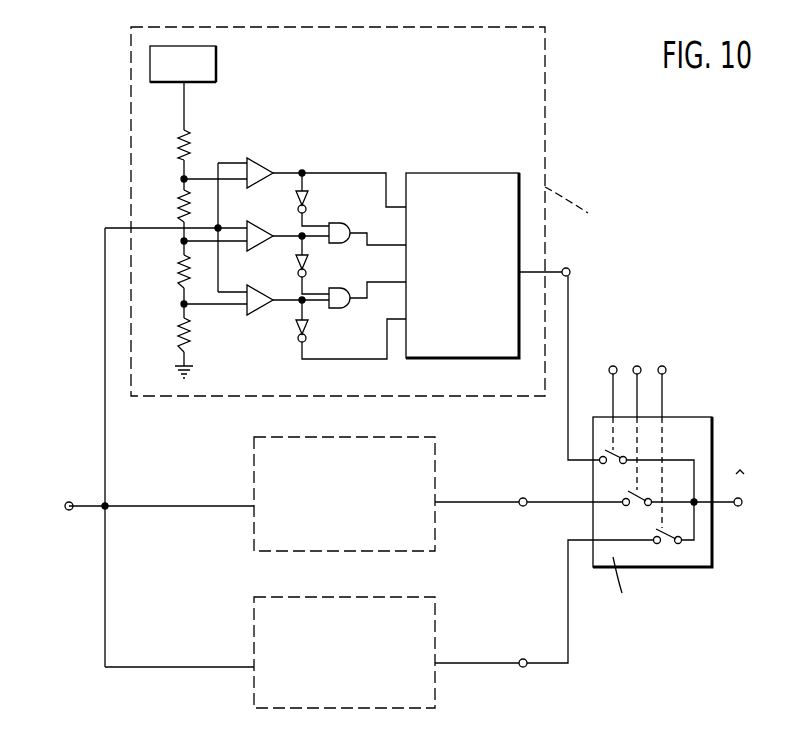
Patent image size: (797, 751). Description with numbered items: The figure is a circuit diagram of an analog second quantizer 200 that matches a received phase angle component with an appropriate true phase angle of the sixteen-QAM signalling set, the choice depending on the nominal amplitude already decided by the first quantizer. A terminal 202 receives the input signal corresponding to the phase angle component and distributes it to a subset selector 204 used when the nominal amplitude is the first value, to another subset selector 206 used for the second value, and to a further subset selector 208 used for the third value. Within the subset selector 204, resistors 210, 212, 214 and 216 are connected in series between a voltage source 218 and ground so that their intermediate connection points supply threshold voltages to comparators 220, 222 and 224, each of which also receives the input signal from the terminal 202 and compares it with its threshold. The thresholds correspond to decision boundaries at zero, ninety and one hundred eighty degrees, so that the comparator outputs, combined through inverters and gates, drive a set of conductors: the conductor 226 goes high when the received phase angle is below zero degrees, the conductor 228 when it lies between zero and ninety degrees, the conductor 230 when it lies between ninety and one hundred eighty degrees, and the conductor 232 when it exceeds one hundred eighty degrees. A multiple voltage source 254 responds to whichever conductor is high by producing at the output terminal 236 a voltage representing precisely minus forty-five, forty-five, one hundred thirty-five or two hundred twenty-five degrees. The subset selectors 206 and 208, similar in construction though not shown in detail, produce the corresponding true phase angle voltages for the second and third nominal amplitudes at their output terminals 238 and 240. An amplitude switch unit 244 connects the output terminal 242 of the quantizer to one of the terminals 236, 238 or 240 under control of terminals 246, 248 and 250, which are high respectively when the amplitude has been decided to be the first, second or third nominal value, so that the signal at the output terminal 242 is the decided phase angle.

The second quantizer 200 is at (102, 97).
The terminal 202 is at (68, 511).
The subset selector 204 is at (131, 155).
The subset selector 206 is at (254, 484).
The subset selector 208 is at (254, 630).
The resistor 210 is at (192, 150).
The resistor 212 is at (180, 208).
The resistor 214 is at (178, 270).
The resistor 216 is at (178, 327).
The voltage source 218 is at (212, 72).
The comparator 220 is at (262, 312).
The comparator 222 is at (266, 246).
The comparator 224 is at (263, 160).
The conductor 226 is at (374, 359).
The conductor 228 is at (356, 306).
The conductor 230 is at (370, 213).
The conductor 232 is at (340, 172).
The output terminal 236 is at (570, 271).
The output terminal 238 is at (521, 507).
The output terminal 240 is at (534, 648).
The output terminal 242 is at (738, 507).
The amplitude switch unit 244 is at (700, 441).
The terminal 246 is at (610, 367).
The terminal 248 is at (637, 366).
The terminal 250 is at (664, 366).
The multiple voltage source 254 is at (452, 173).